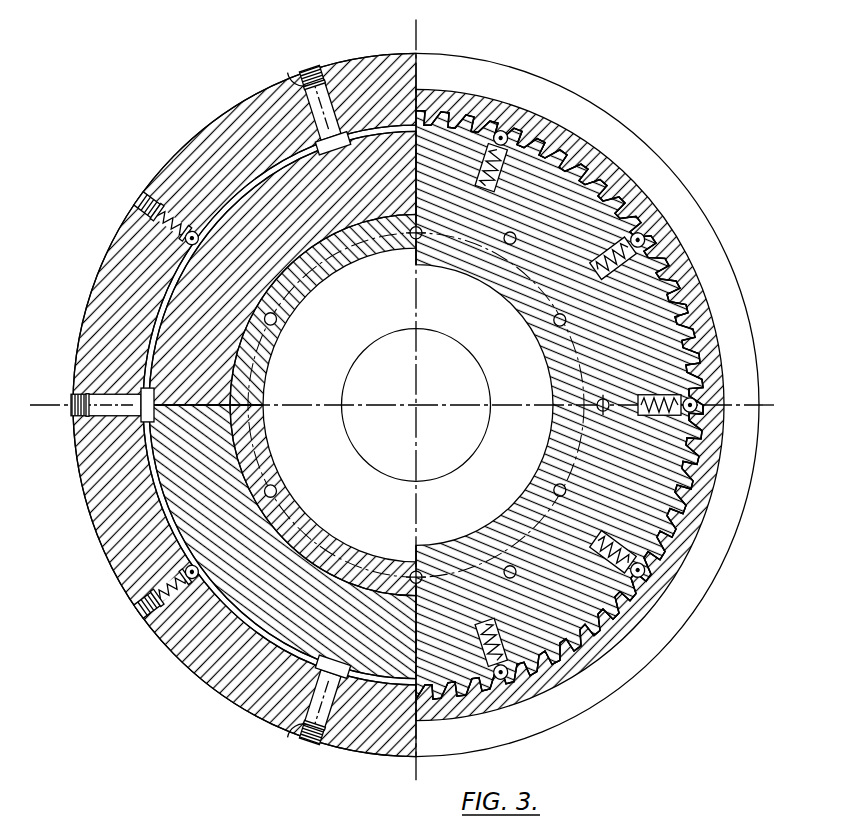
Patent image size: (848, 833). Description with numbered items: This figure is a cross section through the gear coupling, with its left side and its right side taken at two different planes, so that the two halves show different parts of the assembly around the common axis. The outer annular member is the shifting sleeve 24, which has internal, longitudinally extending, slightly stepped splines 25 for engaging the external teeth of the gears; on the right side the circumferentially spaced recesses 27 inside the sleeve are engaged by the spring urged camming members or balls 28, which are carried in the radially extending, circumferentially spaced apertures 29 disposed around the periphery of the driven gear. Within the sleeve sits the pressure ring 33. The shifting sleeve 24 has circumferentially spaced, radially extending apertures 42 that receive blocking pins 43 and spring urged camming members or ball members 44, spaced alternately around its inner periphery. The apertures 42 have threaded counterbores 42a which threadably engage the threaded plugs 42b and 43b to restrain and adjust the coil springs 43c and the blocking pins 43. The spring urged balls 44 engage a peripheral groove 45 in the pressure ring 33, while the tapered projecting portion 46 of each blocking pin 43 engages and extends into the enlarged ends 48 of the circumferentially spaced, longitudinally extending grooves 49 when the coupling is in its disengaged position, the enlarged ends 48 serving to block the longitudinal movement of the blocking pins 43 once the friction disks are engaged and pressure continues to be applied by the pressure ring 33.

The shifting sleeve 24 is at (656, 600).
The splines 25 is at (666, 526).
The recesses 27 is at (700, 405).
The spring urged camming members or balls 28 is at (478, 142).
The apertures 29 is at (503, 135).
The pressure ring 33 is at (656, 488).
The apertures 42 is at (300, 92).
The threaded counterbores 42a is at (320, 70).
The threaded plugs 42b is at (130, 205).
The blocking pins 43 is at (335, 75).
The threaded plugs 43b is at (305, 70).
The coil springs 43c is at (193, 232).
The spring urged camming members or ball members 44 is at (183, 240).
The peripheral groove 45 is at (150, 490).
The tapered projecting portion 46 is at (140, 392).
The enlarged ends 48 is at (143, 472).
The grooves 49 is at (257, 713).